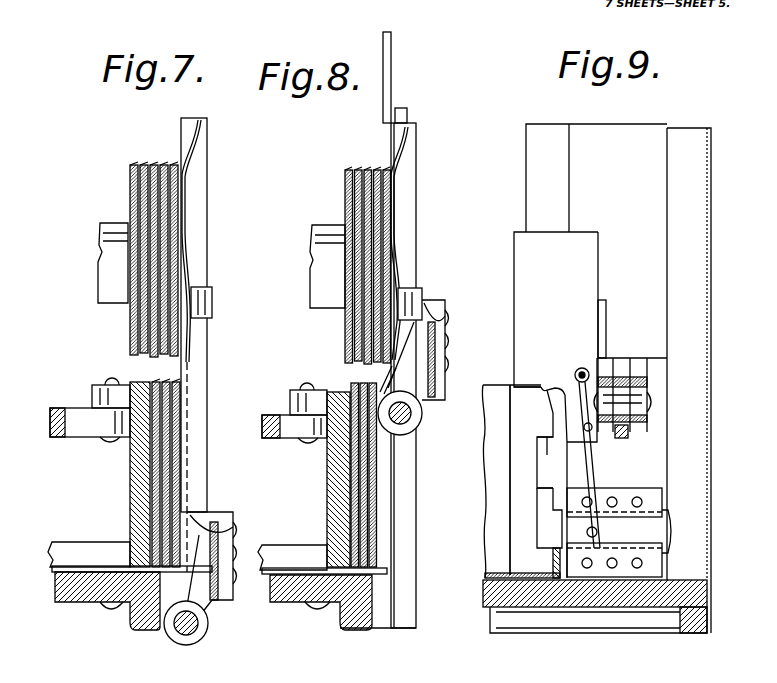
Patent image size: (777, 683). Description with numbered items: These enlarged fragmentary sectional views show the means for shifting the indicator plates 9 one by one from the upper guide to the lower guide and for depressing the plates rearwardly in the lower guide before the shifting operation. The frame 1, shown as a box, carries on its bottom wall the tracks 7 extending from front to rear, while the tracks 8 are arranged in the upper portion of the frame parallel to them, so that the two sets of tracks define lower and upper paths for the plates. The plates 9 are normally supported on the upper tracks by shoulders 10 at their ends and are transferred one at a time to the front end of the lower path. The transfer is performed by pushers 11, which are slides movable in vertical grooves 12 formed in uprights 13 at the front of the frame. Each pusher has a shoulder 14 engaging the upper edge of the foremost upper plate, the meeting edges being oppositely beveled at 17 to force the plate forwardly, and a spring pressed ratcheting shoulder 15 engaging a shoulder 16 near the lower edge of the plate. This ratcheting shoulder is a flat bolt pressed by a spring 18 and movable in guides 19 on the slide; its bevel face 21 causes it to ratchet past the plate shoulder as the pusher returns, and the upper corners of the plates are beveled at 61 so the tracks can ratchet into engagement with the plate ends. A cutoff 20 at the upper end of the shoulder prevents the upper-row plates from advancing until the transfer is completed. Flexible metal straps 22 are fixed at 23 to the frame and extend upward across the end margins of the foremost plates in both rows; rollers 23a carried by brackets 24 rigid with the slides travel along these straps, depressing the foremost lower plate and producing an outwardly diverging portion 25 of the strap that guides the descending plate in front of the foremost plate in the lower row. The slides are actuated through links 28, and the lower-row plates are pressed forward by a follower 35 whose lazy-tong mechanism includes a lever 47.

In FIG. 7, the frame 1 is at (82, 600).
In FIG. 8, the frame 1 is at (284, 604).
In FIG. 9, the frame 1 is at (483, 590).
In FIG. 7, the tracks or guides 7 is at (72, 545).
In FIG. 8, the tracks or guides 7 is at (288, 545).
In FIG. 9, the tracks or guides 7 is at (553, 562).
In FIG. 7, the guides or tracks 8 is at (106, 270).
In FIG. 8, the guides or tracks 8 is at (318, 258).
In FIG. 7, the indicator plates 9 is at (141, 185).
In FIG. 8, the indicator plates 9 is at (356, 183).
In FIG. 9, the indicator plates 9 is at (490, 468).
In FIG. 9, the shoulders 10 is at (549, 457).
In FIG. 9, the pushers 11 is at (653, 450).
In FIG. 9, the vertical grooves or guides 12 is at (667, 140).
In FIG. 9, the uprights 13 is at (700, 210).
In FIG. 7, the shoulder 14 is at (182, 242).
In FIG. 8, the shoulder 14 is at (385, 142).
In FIG. 9, the shoulder 14 is at (520, 368).
In FIG. 7, the spring pressed ratcheting shoulder 15 is at (207, 173).
In FIG. 8, the spring pressed ratcheting shoulder 15 is at (410, 217).
In FIG. 9, the spring pressed ratcheting shoulder 15 is at (556, 526).
In FIG. 9, the shoulder 16 is at (540, 555).
In FIG. 7, the bevel 17 is at (178, 166).
In FIG. 8, the bevel 17 is at (378, 168).
In FIG. 9, the spring 18 is at (590, 462).
In FIG. 9, the guides 19 is at (655, 558).
In FIG. 9, the cutoff 20 is at (526, 272).
In FIG. 9, the ratcheting or bevel face 21 is at (549, 486).
In FIG. 7, the flexible metal straps or tapes 22 is at (188, 278).
In FIG. 8, the flexible metal straps or tapes 22 is at (398, 256).
In FIG. 7, the fixing point of straps 23 is at (112, 612).
In FIG. 8, the fixing point of straps 23 is at (311, 612).
In FIG. 7, the rollers 23a is at (180, 646).
In FIG. 8, the rollers 23a is at (422, 418).
In FIG. 7, the brackets 24 is at (215, 612).
In FIG. 9, the brackets 24 is at (483, 380).
In FIG. 8, the outwardly diverging portion 25 is at (385, 373).
In FIG. 9, the links 28 is at (620, 420).
In FIG. 7, the follower 35 is at (140, 476).
In FIG. 8, the follower 35 is at (330, 492).
In FIG. 7, the lever 47 is at (80, 446).
In FIG. 8, the lever 47 is at (290, 443).
In FIG. 9, the bevel 61 is at (568, 385).